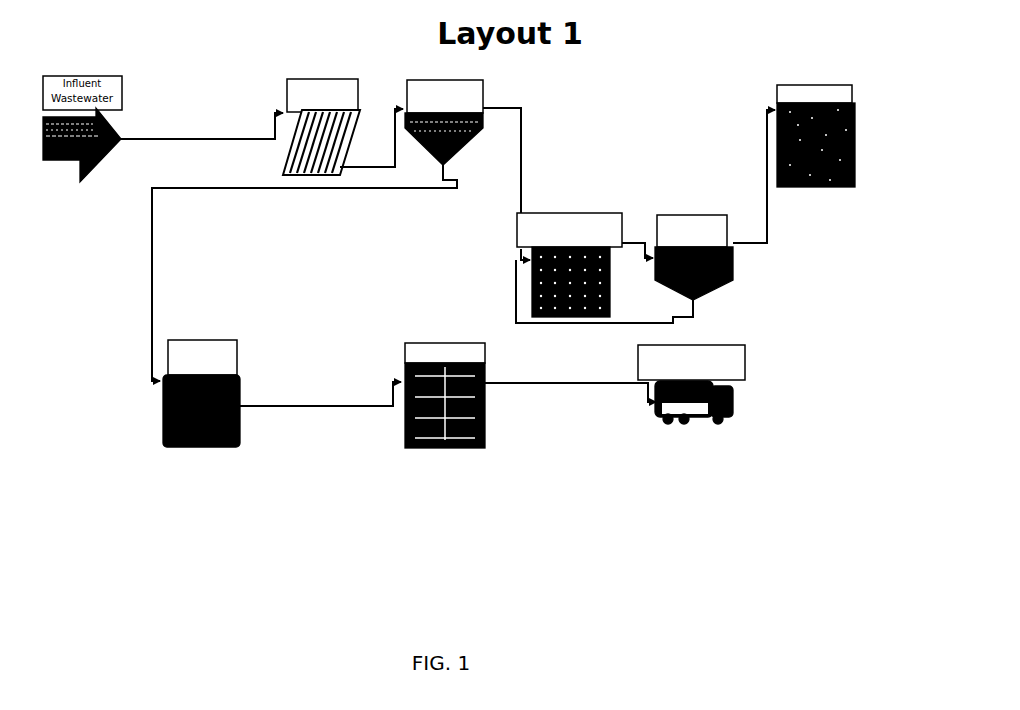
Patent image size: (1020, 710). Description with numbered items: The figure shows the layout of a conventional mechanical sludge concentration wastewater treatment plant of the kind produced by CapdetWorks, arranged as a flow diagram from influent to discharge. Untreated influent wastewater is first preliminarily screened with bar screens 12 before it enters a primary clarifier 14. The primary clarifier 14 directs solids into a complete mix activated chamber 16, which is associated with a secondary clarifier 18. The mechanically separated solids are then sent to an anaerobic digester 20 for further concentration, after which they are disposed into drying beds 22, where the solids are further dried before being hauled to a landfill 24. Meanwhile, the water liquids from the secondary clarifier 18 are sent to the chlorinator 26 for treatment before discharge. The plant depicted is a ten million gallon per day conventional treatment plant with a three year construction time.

The bar screens 12 is at (302, 148).
The primary clarifier 14 is at (477, 93).
The complete mix activated chamber 16 is at (572, 213).
The secondary clarifier 18 is at (733, 268).
The anaerobic digester 20 is at (163, 420).
The drying beds 22 is at (485, 406).
The landfill 24 is at (733, 408).
The chlorinator 26 is at (855, 122).